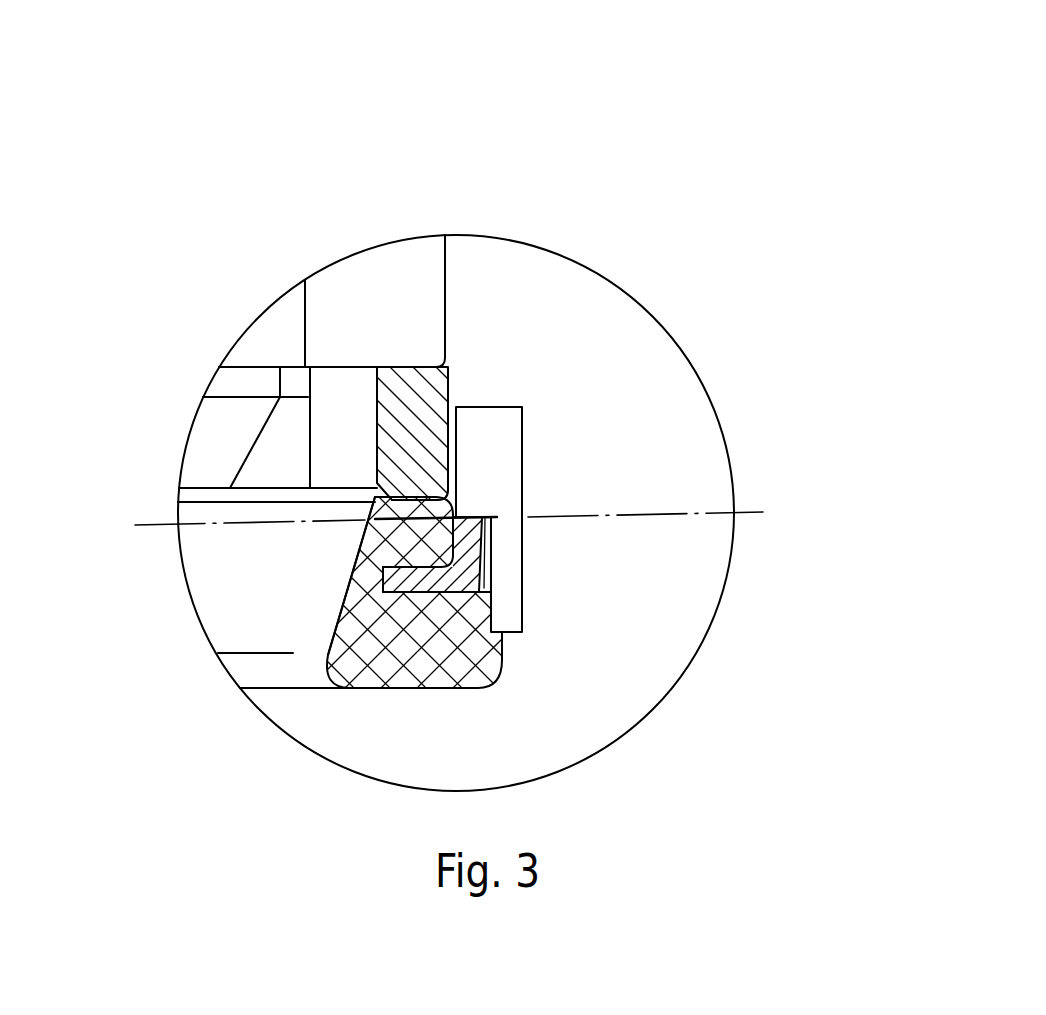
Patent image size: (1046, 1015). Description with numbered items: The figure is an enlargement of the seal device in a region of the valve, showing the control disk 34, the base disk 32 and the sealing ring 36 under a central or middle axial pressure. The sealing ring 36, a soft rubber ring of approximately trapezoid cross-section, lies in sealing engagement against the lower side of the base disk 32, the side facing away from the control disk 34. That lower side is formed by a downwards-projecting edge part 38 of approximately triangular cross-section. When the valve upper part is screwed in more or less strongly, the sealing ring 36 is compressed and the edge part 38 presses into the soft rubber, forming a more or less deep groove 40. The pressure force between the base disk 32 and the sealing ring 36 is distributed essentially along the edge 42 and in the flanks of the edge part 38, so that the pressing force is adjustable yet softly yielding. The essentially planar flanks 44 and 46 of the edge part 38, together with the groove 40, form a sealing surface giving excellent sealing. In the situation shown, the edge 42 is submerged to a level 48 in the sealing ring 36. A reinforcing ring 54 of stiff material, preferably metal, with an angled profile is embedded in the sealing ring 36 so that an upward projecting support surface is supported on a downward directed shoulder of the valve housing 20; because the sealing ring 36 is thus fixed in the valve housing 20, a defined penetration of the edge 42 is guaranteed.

The valve housing 20 is at (500, 425).
The base disk 32 is at (420, 427).
The control disk 34 is at (368, 320).
The sealing ring 36 is at (340, 687).
The edge part 38 is at (398, 502).
The groove 40 is at (430, 487).
The edge 42 is at (350, 580).
The flank 44 is at (385, 518).
The flank 46 is at (486, 538).
The level 48 is at (763, 512).
The reinforcing ring 54 is at (502, 640).